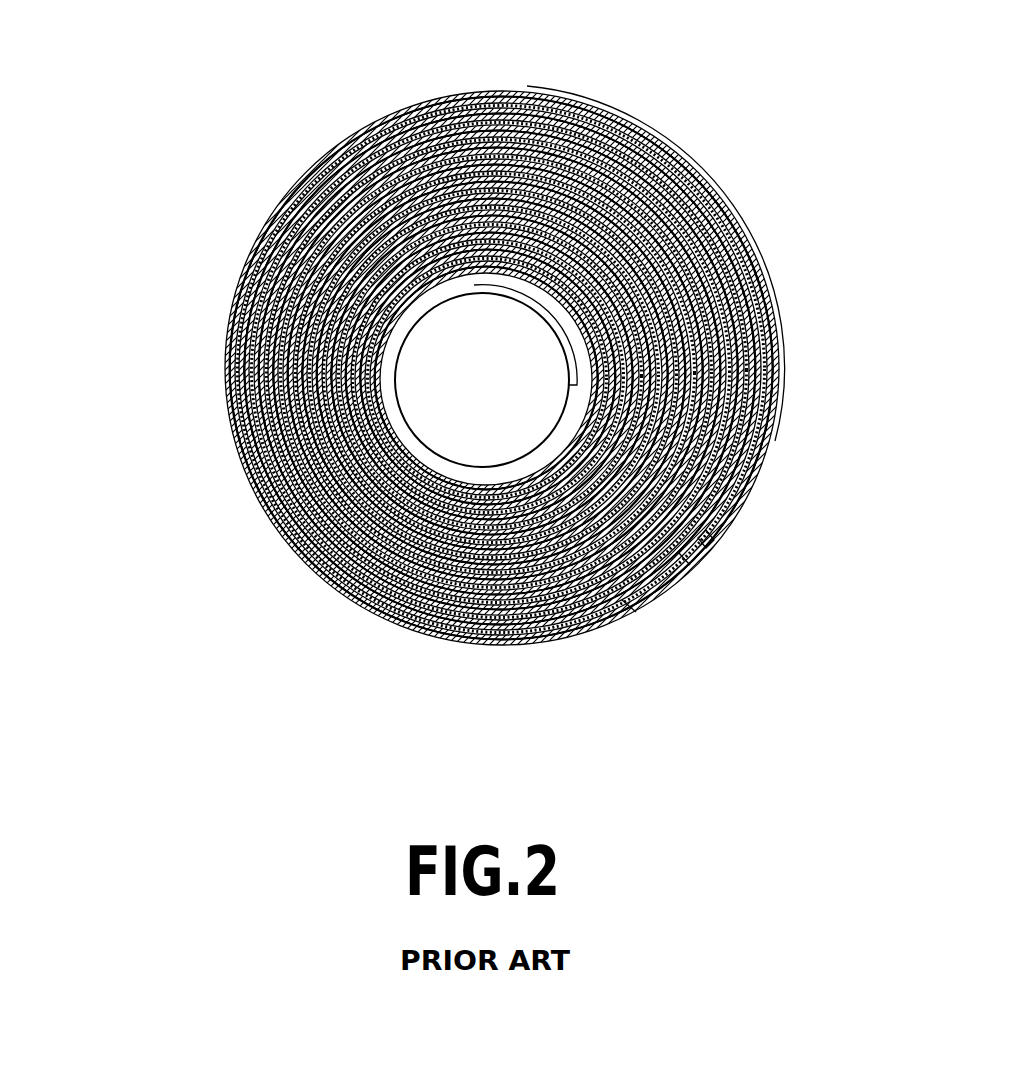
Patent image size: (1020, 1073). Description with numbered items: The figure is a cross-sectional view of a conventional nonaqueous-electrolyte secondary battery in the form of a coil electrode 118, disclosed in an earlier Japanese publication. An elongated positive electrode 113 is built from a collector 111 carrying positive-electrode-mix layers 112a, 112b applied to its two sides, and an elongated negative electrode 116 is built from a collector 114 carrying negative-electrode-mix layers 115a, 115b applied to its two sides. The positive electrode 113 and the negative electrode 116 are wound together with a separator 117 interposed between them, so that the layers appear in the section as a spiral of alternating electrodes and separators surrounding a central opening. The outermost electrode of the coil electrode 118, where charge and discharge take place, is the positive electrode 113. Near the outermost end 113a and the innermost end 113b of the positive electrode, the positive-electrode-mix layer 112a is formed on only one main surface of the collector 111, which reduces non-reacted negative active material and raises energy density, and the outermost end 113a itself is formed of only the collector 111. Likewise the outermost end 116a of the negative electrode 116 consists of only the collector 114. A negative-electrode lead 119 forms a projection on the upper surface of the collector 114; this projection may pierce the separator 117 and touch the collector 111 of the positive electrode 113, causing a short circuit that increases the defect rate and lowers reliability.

The coil electrode 118 is at (451, 370).
The positive electrode 113 is at (452, 336).
The positive-electrode-mix layer 112a is at (645, 137).
The collector 111 is at (760, 480).
The positive-electrode-mix layer 112b is at (272, 228).
The negative electrode 116 is at (440, 369).
The negative-electrode-mix layer 115a is at (253, 502).
The collector 114 is at (727, 515).
The negative-electrode-mix layer 115b is at (283, 557).
The separator 117 is at (233, 327).
The negative-electrode lead 119 is at (703, 543).
The outermost end of the positive electrode 113a is at (628, 605).
The innermost end of the positive electrode 113b is at (452, 290).
The outermost end of the negative electrode 116a is at (683, 560).